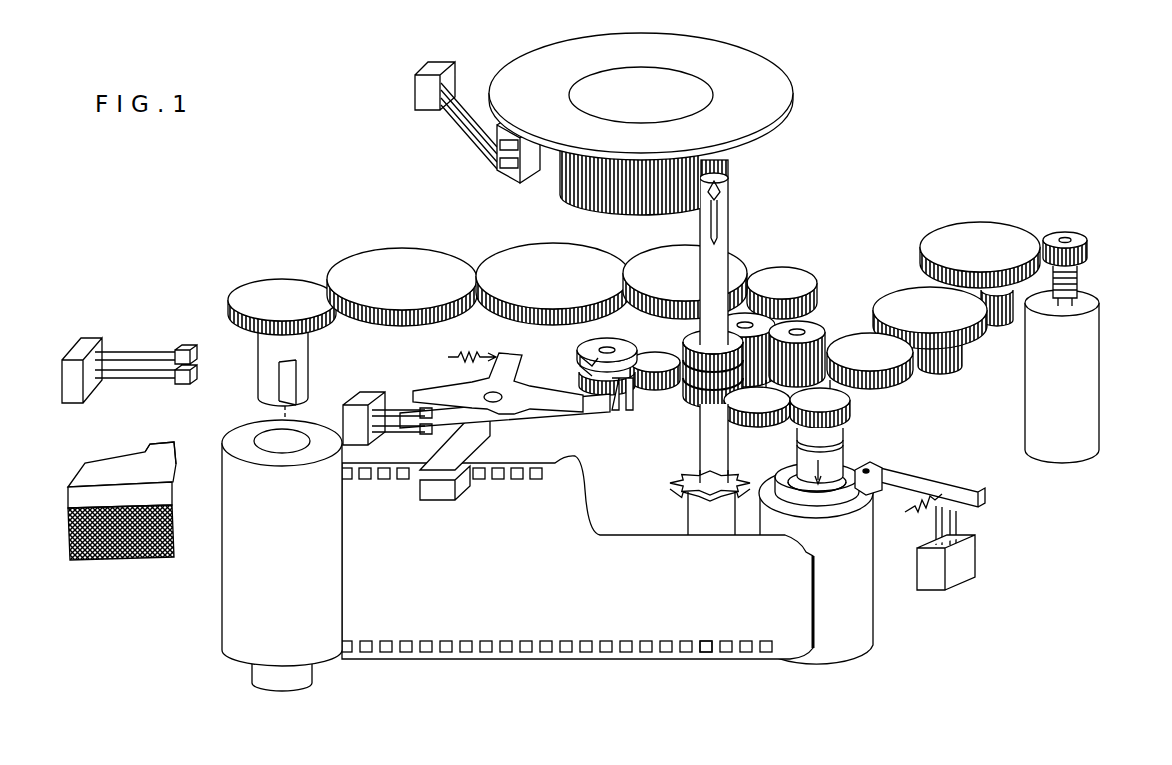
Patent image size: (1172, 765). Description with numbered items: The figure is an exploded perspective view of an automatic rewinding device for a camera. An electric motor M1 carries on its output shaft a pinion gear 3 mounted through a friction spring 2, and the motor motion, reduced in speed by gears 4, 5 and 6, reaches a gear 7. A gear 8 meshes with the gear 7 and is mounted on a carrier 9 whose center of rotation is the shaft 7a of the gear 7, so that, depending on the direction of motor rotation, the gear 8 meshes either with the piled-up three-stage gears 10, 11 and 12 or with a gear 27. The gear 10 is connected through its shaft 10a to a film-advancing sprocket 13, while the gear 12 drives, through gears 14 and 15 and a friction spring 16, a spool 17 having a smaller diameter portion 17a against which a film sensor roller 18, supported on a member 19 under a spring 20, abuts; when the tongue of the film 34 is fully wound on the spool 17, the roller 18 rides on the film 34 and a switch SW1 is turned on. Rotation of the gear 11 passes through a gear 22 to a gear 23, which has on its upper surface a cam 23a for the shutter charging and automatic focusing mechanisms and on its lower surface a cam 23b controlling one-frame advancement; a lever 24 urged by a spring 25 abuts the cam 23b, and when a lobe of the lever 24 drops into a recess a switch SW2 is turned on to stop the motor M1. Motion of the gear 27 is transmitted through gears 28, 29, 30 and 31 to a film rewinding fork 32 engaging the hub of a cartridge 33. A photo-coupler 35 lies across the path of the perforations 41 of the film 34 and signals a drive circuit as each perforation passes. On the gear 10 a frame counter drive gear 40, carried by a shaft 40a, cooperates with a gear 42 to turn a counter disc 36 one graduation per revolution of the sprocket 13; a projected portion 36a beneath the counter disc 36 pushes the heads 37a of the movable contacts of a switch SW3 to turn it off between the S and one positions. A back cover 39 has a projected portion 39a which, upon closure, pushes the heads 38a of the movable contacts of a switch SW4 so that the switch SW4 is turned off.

The friction spring 2 is at (1079, 293).
The pinion gear 3 is at (1072, 236).
The gear 4 is at (982, 230).
The gear 5 is at (898, 302).
The gear 6 is at (851, 342).
The gear 7 is at (812, 338).
The shaft 7a is at (803, 328).
The gear 8 is at (751, 312).
The carrier 9 is at (828, 392).
The gear 10 is at (698, 349).
The shaft 10a is at (706, 451).
The gear 11 is at (690, 393).
The gear 12 is at (692, 407).
The film-advancing sprocket 13 is at (682, 493).
The gear 14 is at (758, 430).
The gear 15 is at (852, 414).
The friction spring 16 is at (846, 447).
The spool 17 is at (866, 621).
The smaller diameter portion 17a is at (852, 514).
The film sensor or roller 18 is at (877, 476).
The support member 19 is at (908, 482).
The spring 20 is at (923, 513).
The gear 22 is at (652, 360).
The gear 23 is at (626, 402).
The cam 23a is at (585, 353).
The cam 23b is at (614, 416).
The lever 24 is at (560, 412).
The spring 25 is at (470, 356).
The gear 27 is at (780, 276).
The gear 28 is at (661, 262).
The gear 29 is at (563, 260).
The gear 30 is at (420, 264).
The gear 31 is at (283, 287).
The film rewinding fork 32 is at (270, 352).
The cartridge 33 is at (245, 578).
The film 34 is at (606, 650).
The photo-coupler 35 is at (492, 451).
The counter disc 36 is at (708, 53).
The projected portion 36a is at (512, 184).
The heads of movable contacts 37a is at (499, 156).
The heads of movable contacts 38a is at (185, 386).
The back cover 39 is at (108, 470).
The projected portion 39a is at (172, 444).
The frame counter drive gear 40 is at (729, 205).
The shaft 40a is at (729, 247).
The perforations 41 is at (703, 653).
The gear 42 is at (729, 166).
The switch SW1 is at (977, 561).
The switch SW2 is at (362, 401).
The switch SW3 is at (441, 76).
The switch SW4 is at (88, 347).
The electric motor M1 is at (1090, 379).